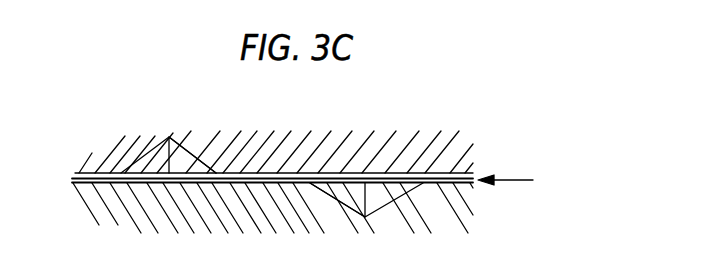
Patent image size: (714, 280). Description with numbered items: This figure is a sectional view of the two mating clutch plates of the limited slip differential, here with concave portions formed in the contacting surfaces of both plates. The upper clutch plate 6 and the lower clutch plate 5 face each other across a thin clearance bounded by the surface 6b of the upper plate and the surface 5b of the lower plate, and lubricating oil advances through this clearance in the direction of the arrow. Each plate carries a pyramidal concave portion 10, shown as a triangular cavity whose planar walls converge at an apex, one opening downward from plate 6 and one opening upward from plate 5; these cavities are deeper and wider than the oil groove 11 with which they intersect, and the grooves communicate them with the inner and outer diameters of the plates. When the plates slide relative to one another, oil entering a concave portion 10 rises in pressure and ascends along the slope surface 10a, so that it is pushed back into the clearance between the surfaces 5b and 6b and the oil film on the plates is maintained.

The clutch plate 5 is at (245, 223).
The surface of clutch plate 5b is at (76, 173).
The clutch plate 6 is at (335, 150).
The surface of clutch plate 6b is at (271, 173).
The concave portion 10 is at (157, 155).
The slope surface 10a is at (190, 161).
The oil groove 11 is at (433, 183).